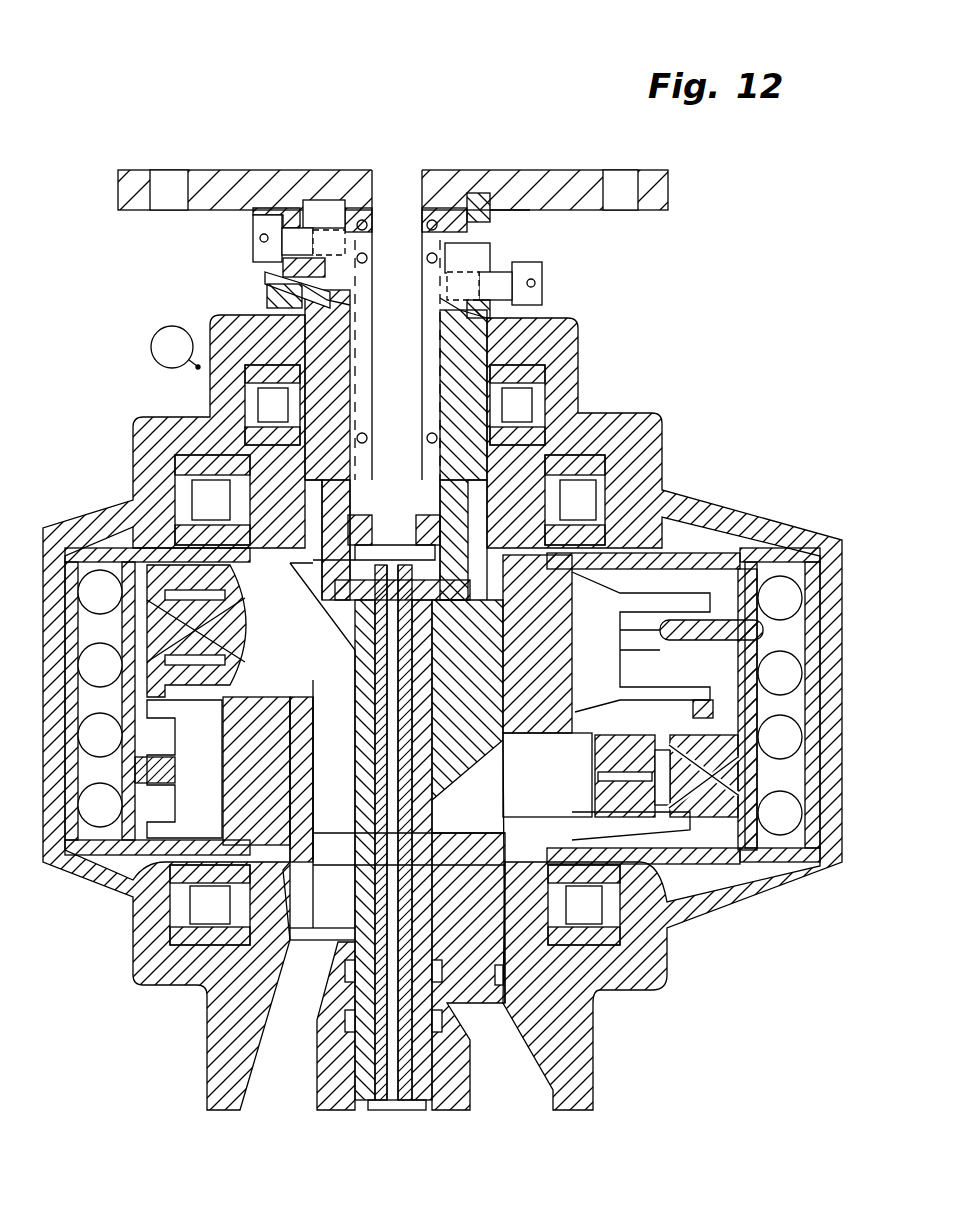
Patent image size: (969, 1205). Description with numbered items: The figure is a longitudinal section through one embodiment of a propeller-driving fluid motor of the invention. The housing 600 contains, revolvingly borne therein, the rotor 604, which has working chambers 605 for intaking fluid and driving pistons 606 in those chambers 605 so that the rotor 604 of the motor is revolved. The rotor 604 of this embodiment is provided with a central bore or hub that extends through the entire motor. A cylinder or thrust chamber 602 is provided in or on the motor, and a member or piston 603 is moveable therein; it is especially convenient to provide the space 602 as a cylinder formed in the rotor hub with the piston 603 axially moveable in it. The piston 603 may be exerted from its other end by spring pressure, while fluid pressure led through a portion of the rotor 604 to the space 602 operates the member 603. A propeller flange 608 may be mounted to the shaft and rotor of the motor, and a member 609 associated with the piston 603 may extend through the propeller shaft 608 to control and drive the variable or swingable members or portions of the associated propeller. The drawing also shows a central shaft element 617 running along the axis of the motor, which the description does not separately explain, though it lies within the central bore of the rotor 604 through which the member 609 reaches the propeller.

The housing 600 is at (714, 516).
The thrust chamber 602 is at (433, 568).
The piston 603 is at (398, 533).
The rotor 604 is at (537, 693).
The working chambers 605 is at (293, 633).
The pistons 606 is at (252, 672).
The propeller flange 608 is at (580, 200).
The member 609 is at (400, 288).
The central shaft 617 is at (393, 774).